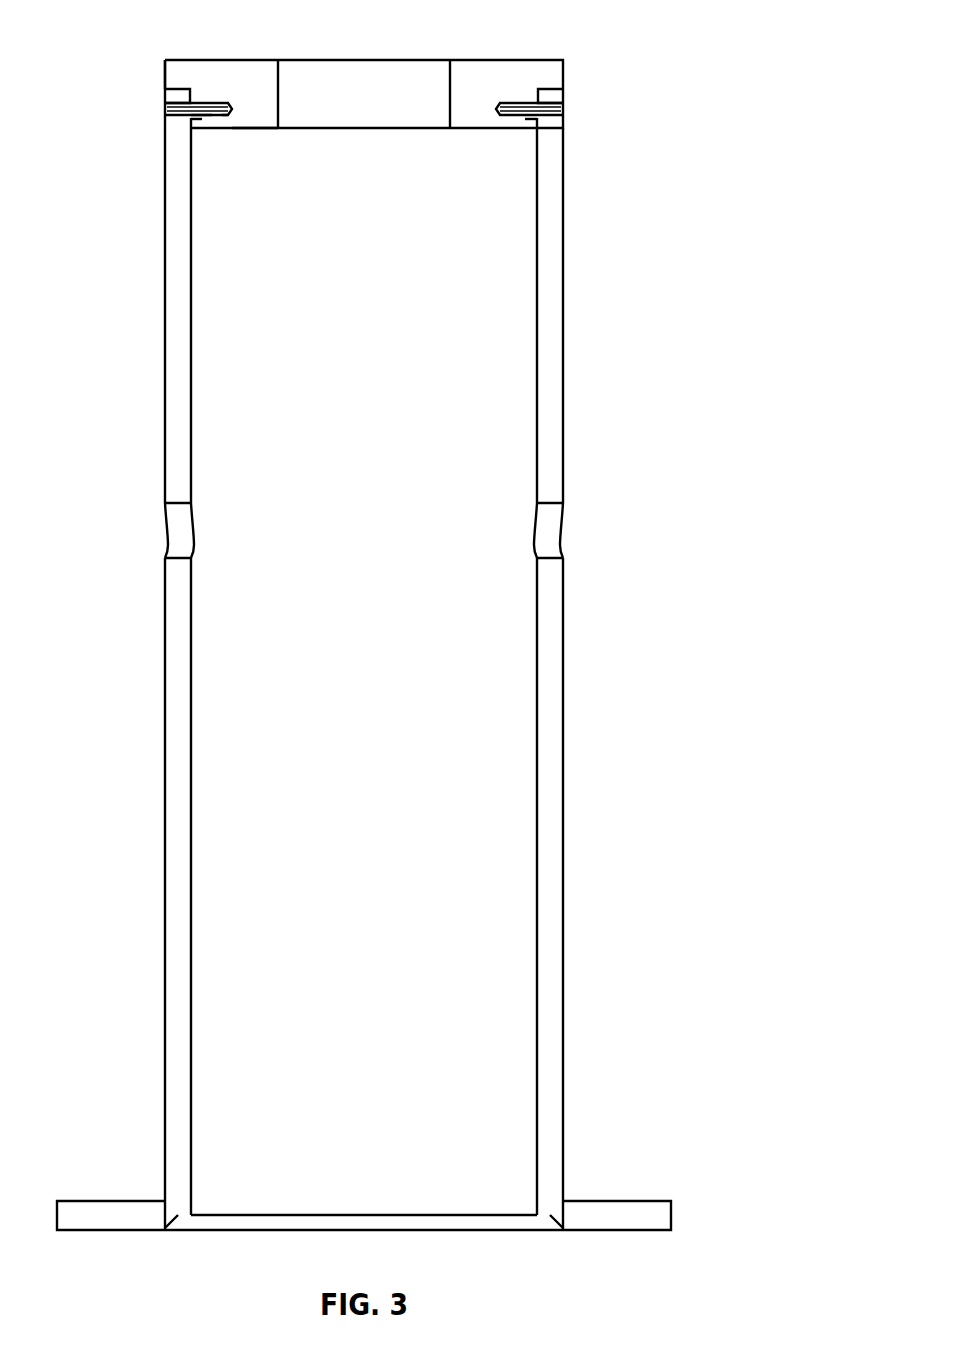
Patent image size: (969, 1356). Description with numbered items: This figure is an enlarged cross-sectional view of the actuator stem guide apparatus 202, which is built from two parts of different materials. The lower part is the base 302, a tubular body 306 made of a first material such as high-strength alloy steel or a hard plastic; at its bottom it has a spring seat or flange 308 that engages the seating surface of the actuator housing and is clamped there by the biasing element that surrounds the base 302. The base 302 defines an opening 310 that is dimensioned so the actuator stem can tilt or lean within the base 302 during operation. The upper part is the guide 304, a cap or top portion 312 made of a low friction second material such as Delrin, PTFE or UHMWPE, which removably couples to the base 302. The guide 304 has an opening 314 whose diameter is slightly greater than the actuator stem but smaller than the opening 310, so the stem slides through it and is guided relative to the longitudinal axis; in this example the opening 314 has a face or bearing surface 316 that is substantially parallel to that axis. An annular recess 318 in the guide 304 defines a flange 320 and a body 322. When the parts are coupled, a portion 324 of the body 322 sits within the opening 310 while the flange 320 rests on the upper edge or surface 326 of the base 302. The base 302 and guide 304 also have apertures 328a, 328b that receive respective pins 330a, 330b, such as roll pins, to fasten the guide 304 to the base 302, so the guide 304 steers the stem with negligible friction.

The actuator stem guide apparatus 202 is at (655, 43).
The base 302 is at (563, 935).
The guide 304 is at (487, 60).
The tubular body 306 is at (548, 1003).
The flange 308 is at (671, 1215).
The opening 310 is at (192, 660).
The top portion 312 is at (257, 108).
The opening 314 is at (340, 60).
The bearing surface 316 is at (450, 95).
The annular recess 318 is at (190, 101).
The flange 320 is at (165, 73).
The body 322 is at (222, 120).
The portion 324 is at (200, 119).
The upper edge 326 is at (552, 88).
The aperture 328a is at (212, 103).
The aperture 328b is at (515, 115).
The pin 330a is at (165, 108).
The pin 330b is at (563, 110).